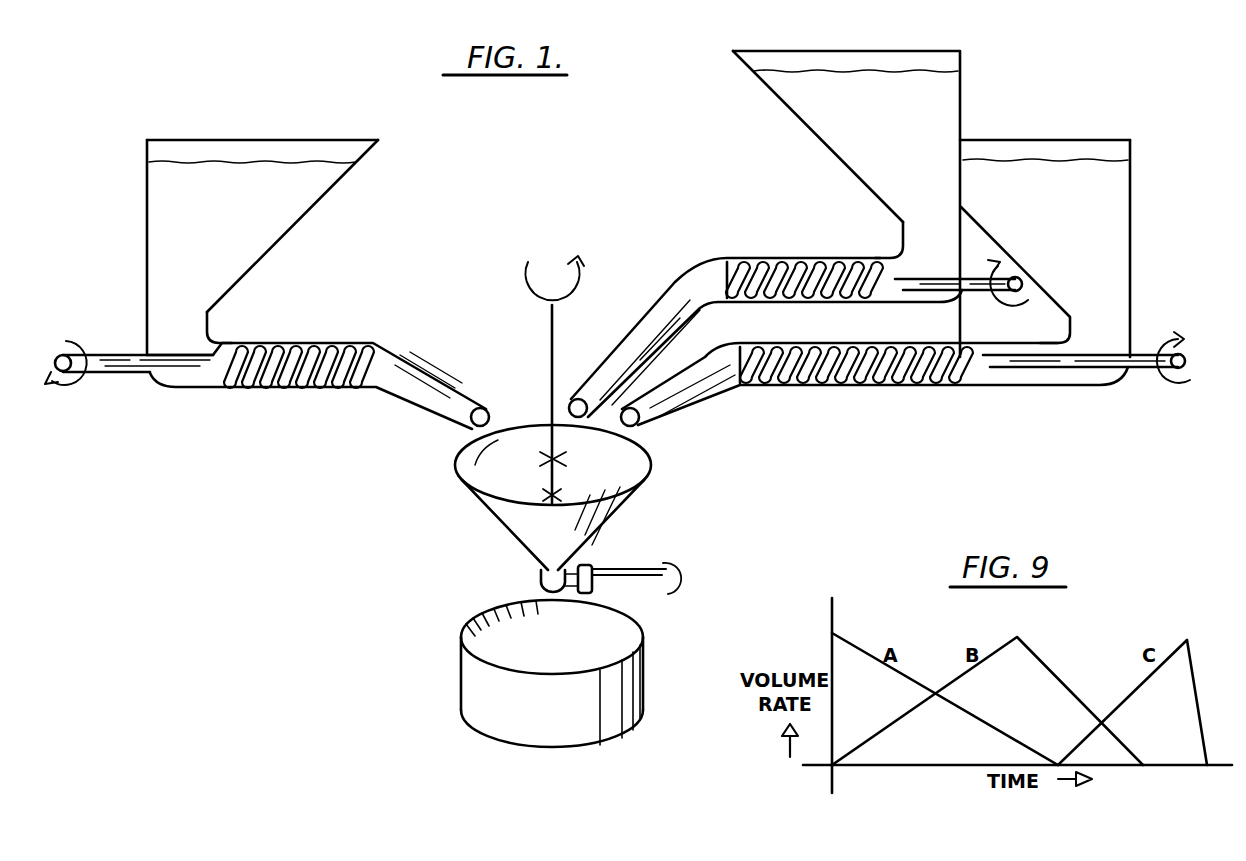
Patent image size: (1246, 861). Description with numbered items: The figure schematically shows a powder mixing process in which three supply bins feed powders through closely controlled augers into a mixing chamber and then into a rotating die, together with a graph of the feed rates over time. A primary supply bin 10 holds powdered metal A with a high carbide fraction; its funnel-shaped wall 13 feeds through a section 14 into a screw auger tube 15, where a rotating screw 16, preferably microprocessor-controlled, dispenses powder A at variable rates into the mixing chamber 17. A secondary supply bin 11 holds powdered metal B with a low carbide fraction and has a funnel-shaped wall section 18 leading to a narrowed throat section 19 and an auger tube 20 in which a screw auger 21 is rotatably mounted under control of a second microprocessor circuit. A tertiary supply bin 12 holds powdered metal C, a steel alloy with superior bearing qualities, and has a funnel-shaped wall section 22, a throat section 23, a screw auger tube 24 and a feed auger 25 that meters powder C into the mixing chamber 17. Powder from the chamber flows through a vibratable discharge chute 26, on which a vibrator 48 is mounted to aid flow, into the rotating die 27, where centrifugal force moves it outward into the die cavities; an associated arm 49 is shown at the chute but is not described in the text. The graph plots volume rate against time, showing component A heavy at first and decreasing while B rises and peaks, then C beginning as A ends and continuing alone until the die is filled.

The primary supply bin 10 is at (262, 228).
The secondary supply bin 11 is at (846, 183).
The tertiary supply bin 12 is at (1075, 227).
The funnel-shaped wall 13 is at (279, 246).
The section 14 is at (208, 328).
The screw auger tube 15 is at (214, 380).
The rotating screw 16 is at (130, 375).
The mixing chamber 17 is at (490, 502).
The funnel-shaped wall section 18 is at (838, 160).
The narrowed throat section 19 is at (903, 236).
The auger tube 20 is at (765, 327).
The screw auger 21 is at (737, 246).
The funnel-shaped wall section 22 is at (1038, 287).
The throat section 23 is at (1132, 306).
The screw auger tube 24 is at (993, 386).
The feed auger 25 is at (766, 386).
The vibratable discharge chute 26 is at (540, 580).
The rotating die 27 is at (645, 658).
The vibrator 48 is at (593, 568).
The actuator arm 49 is at (630, 576).